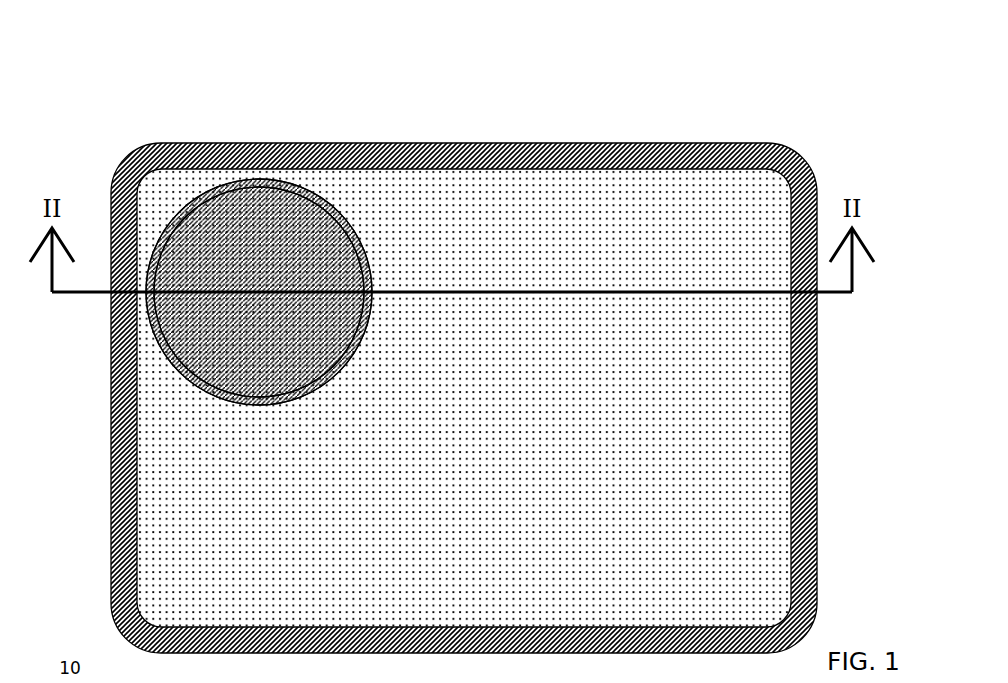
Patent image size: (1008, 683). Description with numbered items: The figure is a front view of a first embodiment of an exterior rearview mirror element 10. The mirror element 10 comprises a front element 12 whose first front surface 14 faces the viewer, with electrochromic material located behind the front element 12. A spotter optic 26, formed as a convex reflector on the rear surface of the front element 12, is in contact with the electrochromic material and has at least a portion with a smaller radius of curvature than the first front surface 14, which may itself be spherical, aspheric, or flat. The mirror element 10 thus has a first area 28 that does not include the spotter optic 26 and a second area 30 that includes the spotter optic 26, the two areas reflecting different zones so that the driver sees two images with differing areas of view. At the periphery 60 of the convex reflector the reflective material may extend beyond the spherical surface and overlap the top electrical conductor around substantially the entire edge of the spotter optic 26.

The exterior rearview mirror element 10 is at (569, 108).
The front element 12 is at (752, 429).
The first front surface 14 is at (682, 197).
The spotter optic 26 is at (194, 188).
The first area 28 is at (490, 210).
The second area 30 is at (268, 217).
The periphery 60 is at (339, 195).